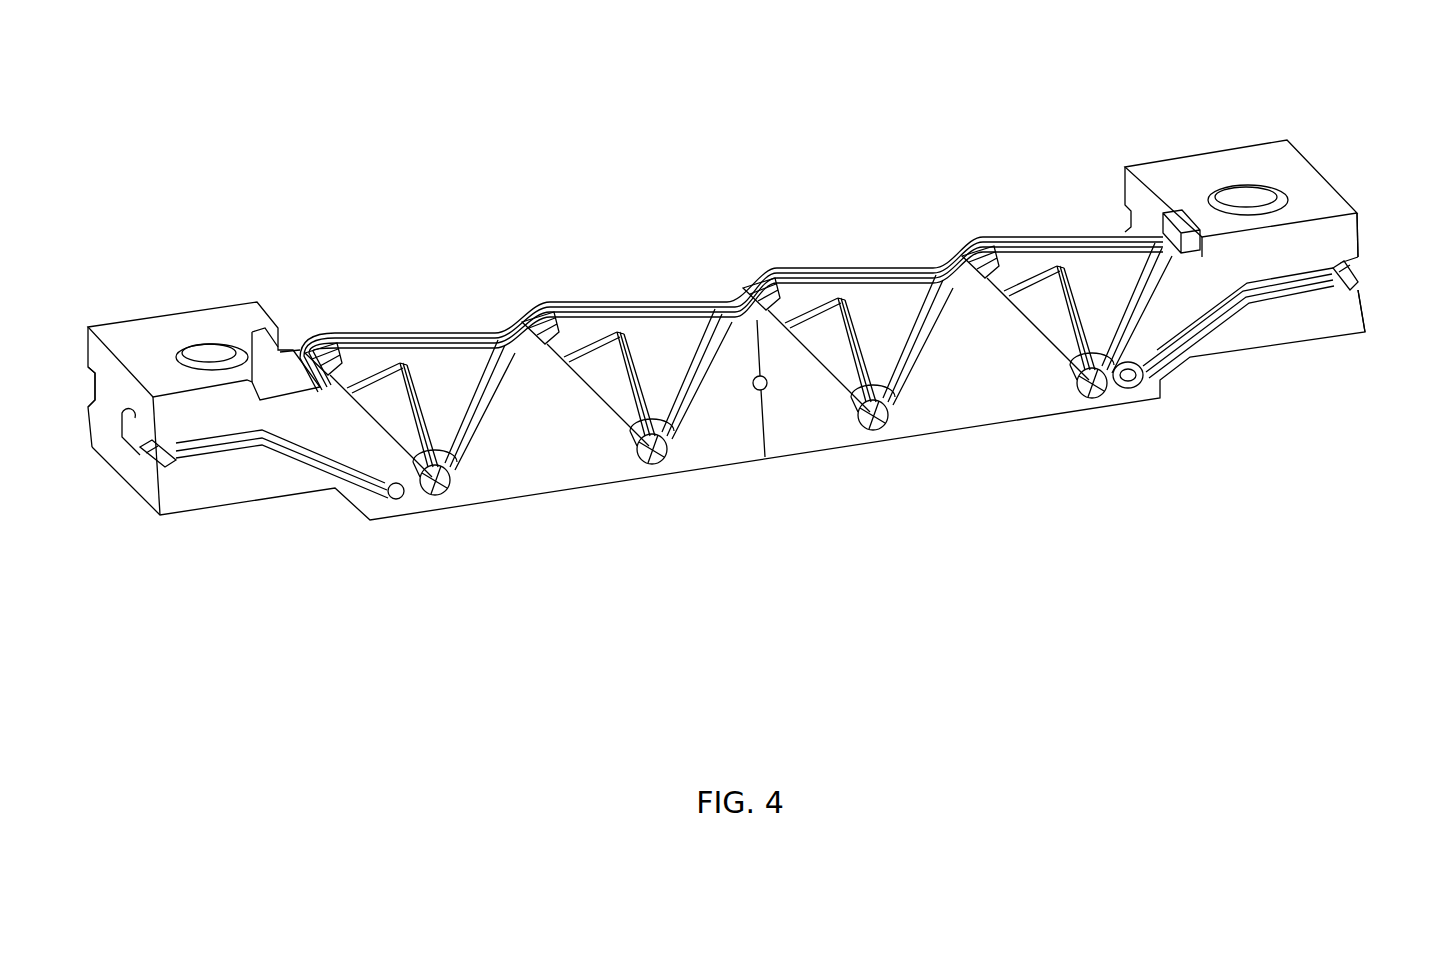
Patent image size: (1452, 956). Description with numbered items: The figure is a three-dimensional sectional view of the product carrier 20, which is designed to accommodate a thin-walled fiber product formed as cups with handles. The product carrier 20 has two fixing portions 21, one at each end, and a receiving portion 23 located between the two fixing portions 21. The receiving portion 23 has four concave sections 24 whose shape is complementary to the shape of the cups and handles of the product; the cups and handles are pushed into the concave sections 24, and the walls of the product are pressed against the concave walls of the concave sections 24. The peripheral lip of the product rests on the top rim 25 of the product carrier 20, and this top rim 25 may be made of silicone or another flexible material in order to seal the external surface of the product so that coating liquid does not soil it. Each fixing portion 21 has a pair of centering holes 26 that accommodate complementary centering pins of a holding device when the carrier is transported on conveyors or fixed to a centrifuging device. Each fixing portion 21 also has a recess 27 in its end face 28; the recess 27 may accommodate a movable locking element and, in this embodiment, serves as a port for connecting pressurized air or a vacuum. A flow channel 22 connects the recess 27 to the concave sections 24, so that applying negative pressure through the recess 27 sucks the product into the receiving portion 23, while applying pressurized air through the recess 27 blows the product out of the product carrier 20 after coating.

The product carrier 20 is at (877, 472).
The fixing portion 21 is at (228, 325).
The flow channel 22 is at (318, 465).
The receiving portion 23 is at (721, 239).
The concave section 24 is at (442, 377).
The top rim 25 is at (612, 300).
The centering hole 26 is at (212, 362).
The recess 27 is at (143, 455).
The end face 28 is at (118, 387).